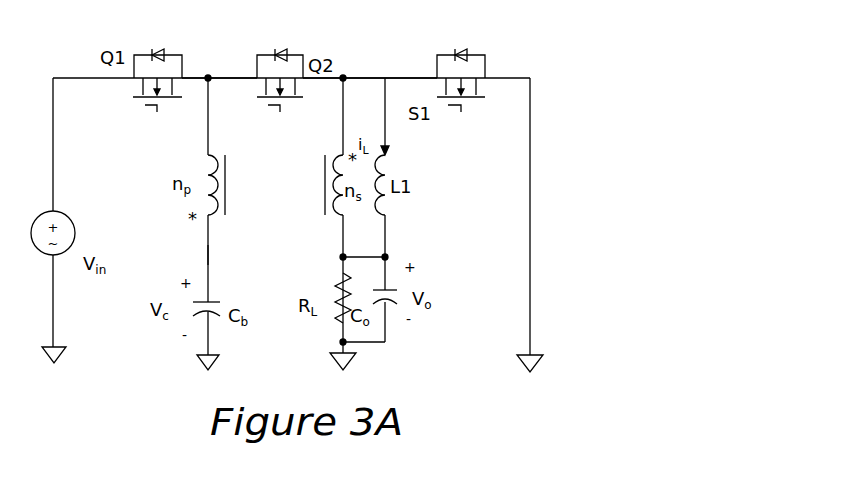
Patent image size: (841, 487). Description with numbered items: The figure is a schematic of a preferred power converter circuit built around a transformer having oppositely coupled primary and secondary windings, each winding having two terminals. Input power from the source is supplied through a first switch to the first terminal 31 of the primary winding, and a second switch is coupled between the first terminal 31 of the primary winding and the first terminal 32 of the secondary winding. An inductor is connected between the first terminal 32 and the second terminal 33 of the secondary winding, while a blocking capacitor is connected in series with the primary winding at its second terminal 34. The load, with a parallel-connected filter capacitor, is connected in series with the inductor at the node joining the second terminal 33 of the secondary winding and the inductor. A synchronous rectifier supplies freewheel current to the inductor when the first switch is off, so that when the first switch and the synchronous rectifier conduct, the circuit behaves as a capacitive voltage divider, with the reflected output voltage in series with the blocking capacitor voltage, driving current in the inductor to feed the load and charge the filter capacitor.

The first terminal of the primary winding 31 is at (208, 78).
The first terminal of the secondary winding 32 is at (385, 78).
The second terminal of the secondary winding 33 is at (343, 257).
The second terminal of the primary winding 34 is at (208, 255).